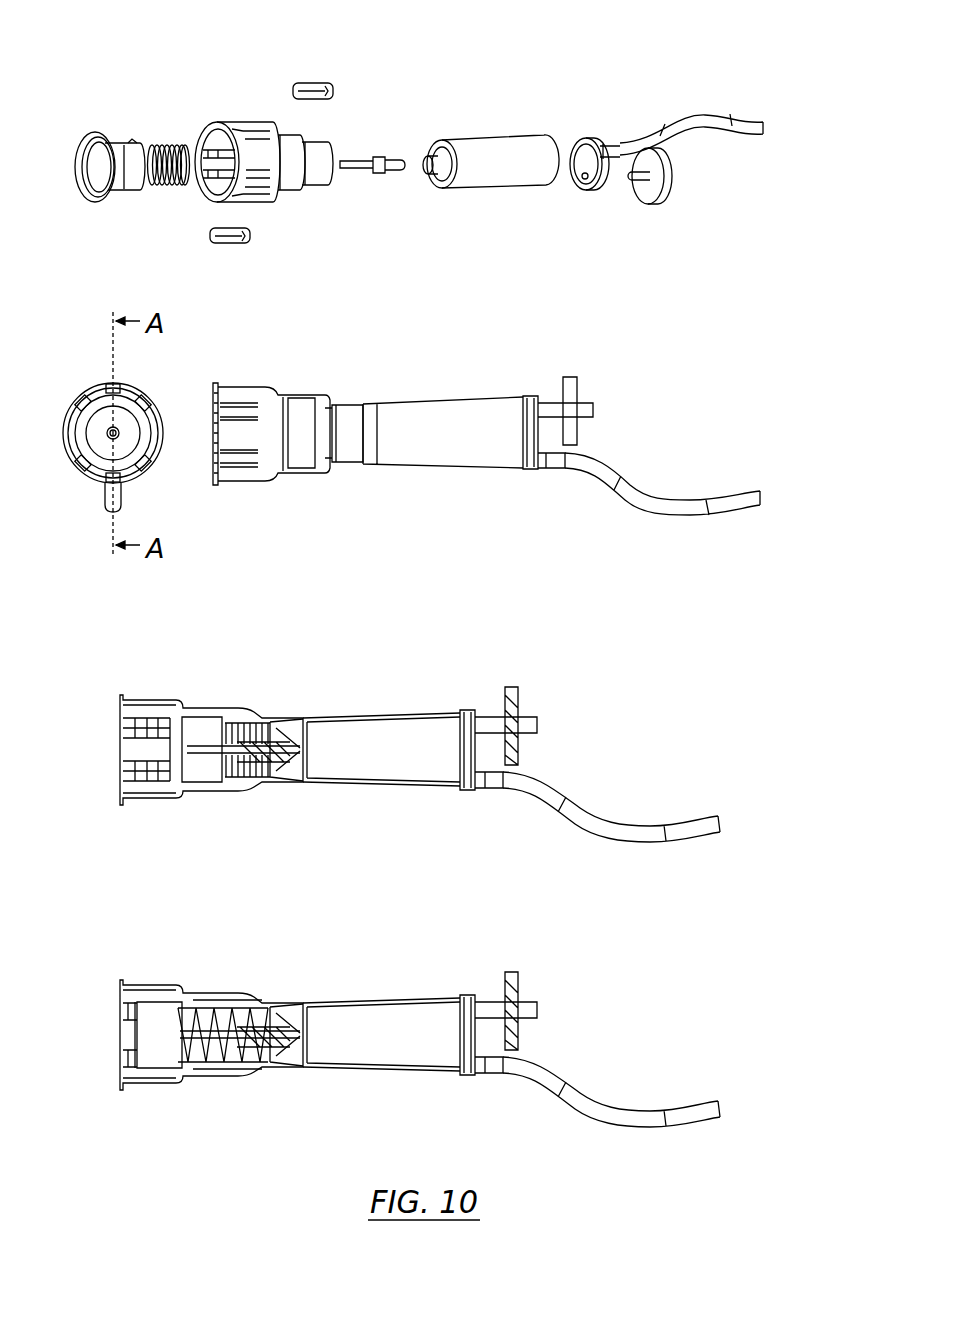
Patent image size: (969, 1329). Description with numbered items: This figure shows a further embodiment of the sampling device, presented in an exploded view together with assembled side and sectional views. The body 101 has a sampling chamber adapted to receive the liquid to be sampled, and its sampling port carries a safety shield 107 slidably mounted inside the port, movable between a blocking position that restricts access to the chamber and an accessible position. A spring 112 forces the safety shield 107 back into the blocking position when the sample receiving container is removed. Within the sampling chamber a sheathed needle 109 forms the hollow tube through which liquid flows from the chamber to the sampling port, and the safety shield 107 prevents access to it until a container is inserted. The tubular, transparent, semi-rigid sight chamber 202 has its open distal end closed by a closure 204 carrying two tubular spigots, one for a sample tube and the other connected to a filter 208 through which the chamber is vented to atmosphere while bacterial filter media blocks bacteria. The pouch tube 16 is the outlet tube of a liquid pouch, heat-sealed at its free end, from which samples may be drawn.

The pouch tube 16 is at (708, 118).
The body 101 is at (238, 117).
The safety shield 107 is at (115, 142).
The sheathed needle 109 is at (370, 170).
The spring 112 is at (158, 183).
The sight chamber 202 is at (483, 148).
The closure 204 is at (587, 190).
The filter 208 is at (663, 200).